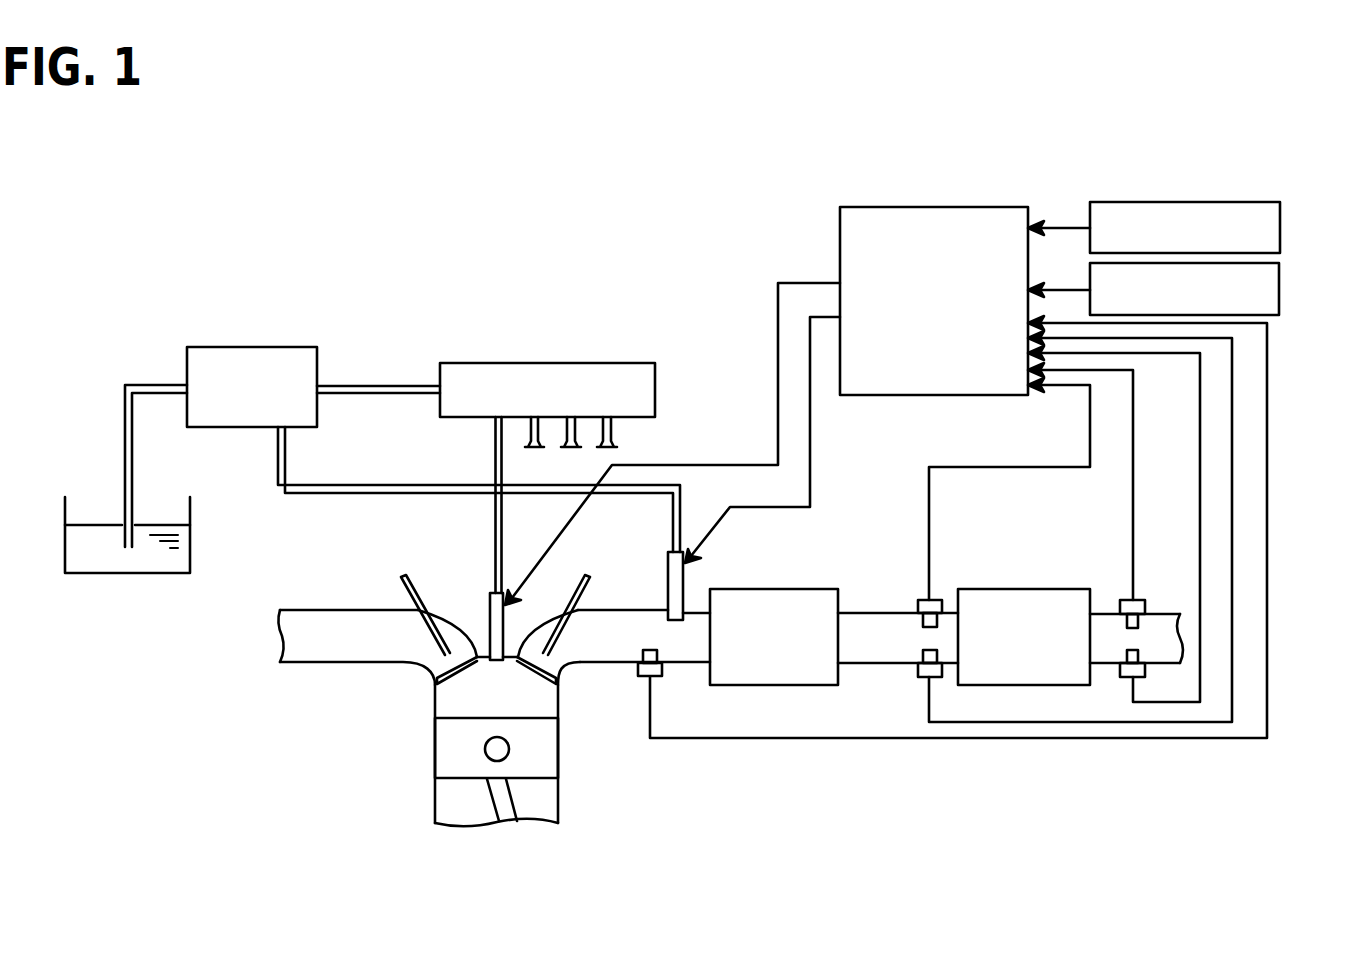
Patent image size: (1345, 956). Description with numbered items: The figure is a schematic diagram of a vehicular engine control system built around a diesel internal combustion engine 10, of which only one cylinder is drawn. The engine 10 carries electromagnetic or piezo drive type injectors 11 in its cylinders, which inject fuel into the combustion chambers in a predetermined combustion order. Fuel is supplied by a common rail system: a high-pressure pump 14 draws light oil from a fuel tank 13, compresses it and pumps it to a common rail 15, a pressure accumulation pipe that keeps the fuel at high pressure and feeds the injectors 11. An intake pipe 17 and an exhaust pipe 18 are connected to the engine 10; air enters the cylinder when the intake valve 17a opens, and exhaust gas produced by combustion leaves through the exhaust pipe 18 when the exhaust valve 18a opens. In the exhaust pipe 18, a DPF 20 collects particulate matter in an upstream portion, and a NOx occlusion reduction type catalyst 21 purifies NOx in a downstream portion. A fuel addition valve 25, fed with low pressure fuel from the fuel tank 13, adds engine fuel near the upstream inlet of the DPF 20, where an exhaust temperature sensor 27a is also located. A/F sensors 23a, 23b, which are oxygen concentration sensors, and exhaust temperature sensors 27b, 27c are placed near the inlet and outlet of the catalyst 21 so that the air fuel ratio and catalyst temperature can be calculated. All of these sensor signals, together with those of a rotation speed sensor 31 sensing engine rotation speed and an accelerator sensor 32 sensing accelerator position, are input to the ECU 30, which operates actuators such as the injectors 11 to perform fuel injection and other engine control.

The internal combustion engine 10 is at (435, 755).
The injectors 11 is at (490, 597).
The fuel tank 13 is at (85, 575).
The high-pressure pump 14 is at (285, 345).
The common rail 15 is at (618, 362).
The intake pipe 17 is at (317, 664).
The intake valve 17a is at (403, 588).
The exhaust pipe 18 is at (603, 664).
The exhaust valve 18a is at (590, 588).
The DPF 20 is at (747, 587).
The catalyst 21 is at (1050, 588).
The A/F sensor 23a is at (937, 598).
The A/F sensor 23b is at (1135, 600).
The fuel addition valve 25 is at (668, 568).
The exhaust temperature sensor 27a is at (658, 676).
The exhaust temperature sensor 27b is at (922, 678).
The exhaust temperature sensor 27c is at (1127, 678).
The ECU 30 is at (987, 205).
The rotation speed sensor 31 is at (1282, 230).
The accelerator sensor 32 is at (1282, 292).